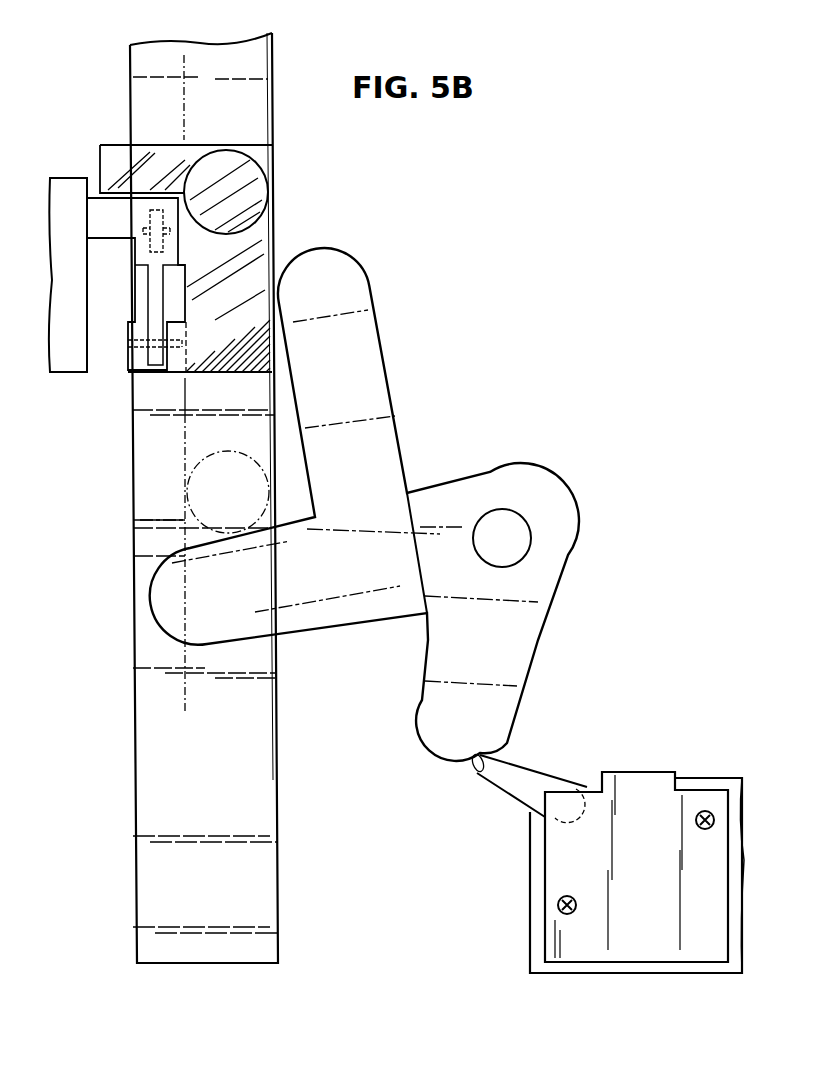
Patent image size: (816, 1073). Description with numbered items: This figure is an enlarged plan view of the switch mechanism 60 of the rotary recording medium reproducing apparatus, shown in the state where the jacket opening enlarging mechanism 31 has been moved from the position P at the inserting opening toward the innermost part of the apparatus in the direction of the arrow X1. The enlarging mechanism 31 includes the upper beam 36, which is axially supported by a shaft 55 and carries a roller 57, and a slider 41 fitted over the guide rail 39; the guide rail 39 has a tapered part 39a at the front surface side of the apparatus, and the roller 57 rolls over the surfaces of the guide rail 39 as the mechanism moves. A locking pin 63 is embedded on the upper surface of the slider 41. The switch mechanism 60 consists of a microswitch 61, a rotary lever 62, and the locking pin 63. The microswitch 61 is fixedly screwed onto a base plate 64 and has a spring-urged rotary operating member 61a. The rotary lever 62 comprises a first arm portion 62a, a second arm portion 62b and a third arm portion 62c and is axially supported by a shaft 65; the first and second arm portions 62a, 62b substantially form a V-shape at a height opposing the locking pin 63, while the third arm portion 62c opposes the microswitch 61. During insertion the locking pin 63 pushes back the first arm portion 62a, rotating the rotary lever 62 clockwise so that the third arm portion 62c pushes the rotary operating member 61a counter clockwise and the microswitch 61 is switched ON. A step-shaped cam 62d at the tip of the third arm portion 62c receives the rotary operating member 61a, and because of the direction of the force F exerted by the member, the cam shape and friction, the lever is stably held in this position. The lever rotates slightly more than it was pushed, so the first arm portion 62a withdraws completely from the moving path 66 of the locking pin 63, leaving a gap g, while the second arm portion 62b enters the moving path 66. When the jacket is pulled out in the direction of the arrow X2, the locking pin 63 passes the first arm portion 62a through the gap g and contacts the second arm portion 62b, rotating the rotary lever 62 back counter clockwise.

The switch mechanism 60 is at (102, 99).
The guide rail 39 is at (278, 110).
The tapered part 39a is at (142, 727).
The locking pin 63 is at (248, 165).
The upper beam 36 is at (70, 178).
The roller 57 is at (150, 248).
The shaft 55 is at (178, 345).
The slider 41 is at (266, 248).
The jacket opening enlarging mechanism 31 is at (69, 380).
The moving path 66 is at (187, 437).
The rotary lever 62 is at (359, 520).
The first arm portion 62a is at (365, 290).
The second arm portion 62b is at (179, 636).
The third arm portion 62c is at (518, 708).
The cam 62d is at (478, 768).
The shaft 65 is at (483, 556).
The microswitch 61 is at (550, 876).
The rotary operating member 61a is at (505, 792).
The base plate 64 is at (534, 923).
The gap g is at (250, 295).
The position P is at (287, 900).
The force F is at (493, 722).
The arrow X1 is at (81, 605).
The arrow X2 is at (106, 642).